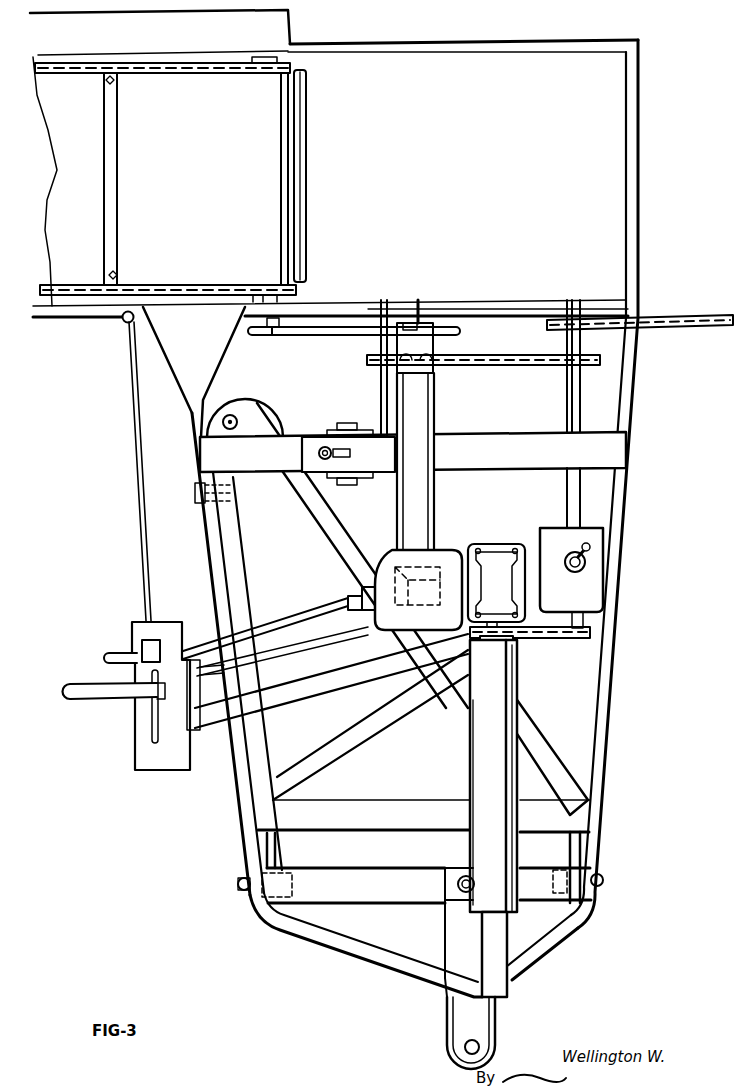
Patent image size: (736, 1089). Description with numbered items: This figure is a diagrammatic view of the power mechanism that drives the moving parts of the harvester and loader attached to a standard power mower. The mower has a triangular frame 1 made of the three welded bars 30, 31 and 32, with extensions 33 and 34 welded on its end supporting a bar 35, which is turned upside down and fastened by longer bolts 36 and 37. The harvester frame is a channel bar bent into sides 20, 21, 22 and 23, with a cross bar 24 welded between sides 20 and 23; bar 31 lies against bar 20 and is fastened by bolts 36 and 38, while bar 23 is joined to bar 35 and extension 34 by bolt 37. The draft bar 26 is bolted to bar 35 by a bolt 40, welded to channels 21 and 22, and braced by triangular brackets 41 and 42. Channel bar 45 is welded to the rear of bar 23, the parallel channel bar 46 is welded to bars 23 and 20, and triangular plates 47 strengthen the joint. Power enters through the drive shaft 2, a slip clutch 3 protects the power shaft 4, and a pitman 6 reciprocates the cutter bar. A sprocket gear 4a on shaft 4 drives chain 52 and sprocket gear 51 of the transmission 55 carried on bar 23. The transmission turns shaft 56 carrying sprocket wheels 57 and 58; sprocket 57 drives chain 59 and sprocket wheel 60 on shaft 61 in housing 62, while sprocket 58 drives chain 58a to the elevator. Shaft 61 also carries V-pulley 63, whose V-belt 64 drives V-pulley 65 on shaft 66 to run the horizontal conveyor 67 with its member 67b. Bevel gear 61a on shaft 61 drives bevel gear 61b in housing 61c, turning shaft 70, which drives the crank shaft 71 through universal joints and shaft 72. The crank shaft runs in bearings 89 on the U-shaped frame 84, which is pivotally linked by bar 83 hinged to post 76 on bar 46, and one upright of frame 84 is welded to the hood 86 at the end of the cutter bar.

The triangular frame 1 is at (573, 778).
The drive shaft 2 is at (497, 973).
The slip clutch 3 is at (500, 717).
The power shaft 4 is at (495, 640).
The sprocket gear 4a is at (520, 637).
The pitman 6 is at (337, 673).
The channel bar 20 is at (250, 800).
The channel bar 21 is at (357, 953).
The channel bar 22 is at (550, 933).
The channel bar 23 is at (638, 152).
The cross bar 24 is at (531, 458).
The draft bar 26 is at (463, 1023).
The bar 30 is at (380, 810).
The bar 31 is at (258, 735).
The bar 32 is at (330, 510).
The frame extension 33 is at (265, 852).
The frame extension 34 is at (573, 850).
The bar 35 is at (367, 887).
The bolt 36 is at (238, 888).
The bolt 37 is at (593, 890).
The bolt 38 is at (197, 503).
The bolt 40 is at (463, 880).
The triangular bracket 41 is at (495, 1025).
The triangular bracket 42 is at (448, 1043).
The channel bar 45 is at (553, 52).
The channel bar 46 is at (500, 298).
The triangular plate 47 is at (185, 357).
The sprocket gear 51 is at (598, 638).
The sprocket chain 52 is at (548, 638).
The transmission 55 is at (587, 582).
The shaft 56 is at (578, 405).
The sprocket wheel 57 is at (590, 352).
The sprocket wheel 58 is at (547, 323).
The chain 58a is at (700, 318).
The chain 59 is at (515, 368).
The sprocket wheel 60 is at (398, 362).
The shaft 61 is at (416, 344).
The bevel gear 61a is at (423, 588).
The bevel gear 61b is at (409, 600).
The housing 61c is at (455, 547).
The housing 62 is at (415, 415).
The V-pulley 63 is at (418, 323).
The V-belt 64 is at (337, 335).
The V-pulley 65 is at (275, 338).
The shaft 66 is at (287, 307).
The horizontal conveyor 67 is at (204, 74).
The screen stile 67b is at (118, 205).
The shaft 70 is at (363, 587).
The crank shaft 71 is at (113, 652).
The shaft 72 is at (300, 625).
The post 76 is at (122, 320).
The bar 83 is at (135, 435).
The U-shaped frame 84 is at (68, 707).
The hood 86 is at (147, 753).
The bearing 89 is at (152, 647).